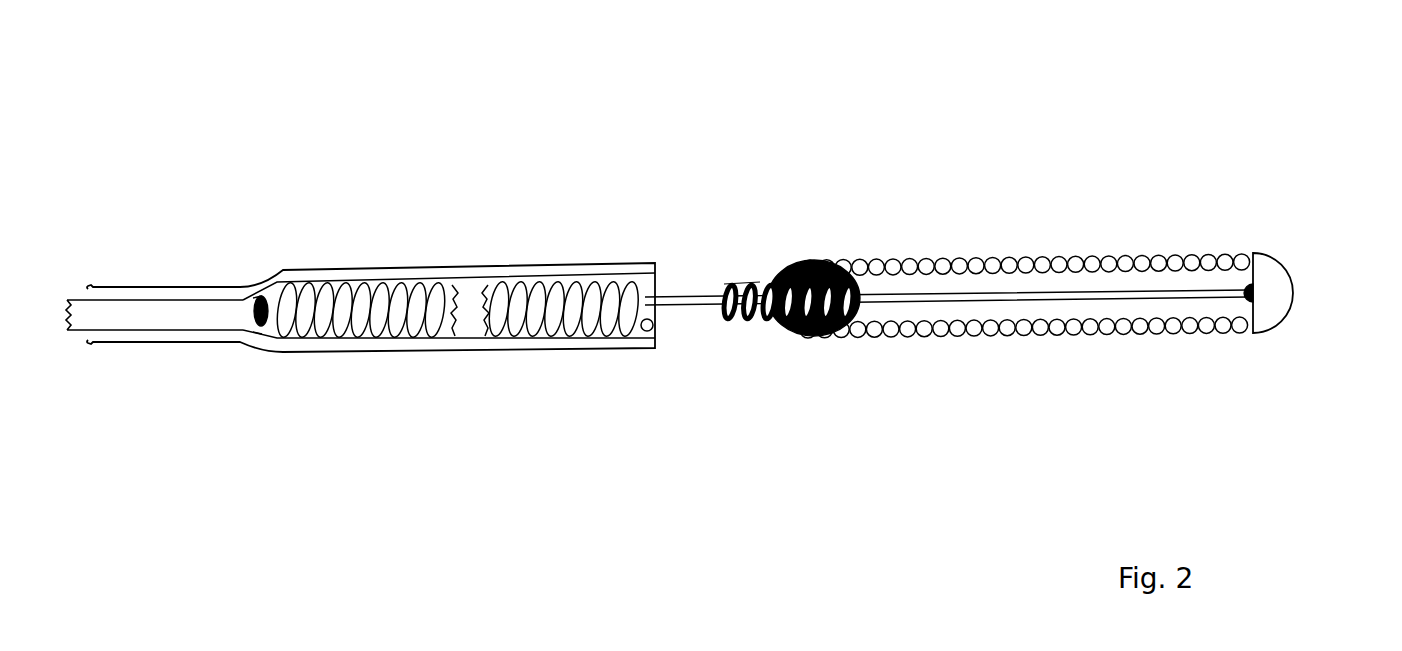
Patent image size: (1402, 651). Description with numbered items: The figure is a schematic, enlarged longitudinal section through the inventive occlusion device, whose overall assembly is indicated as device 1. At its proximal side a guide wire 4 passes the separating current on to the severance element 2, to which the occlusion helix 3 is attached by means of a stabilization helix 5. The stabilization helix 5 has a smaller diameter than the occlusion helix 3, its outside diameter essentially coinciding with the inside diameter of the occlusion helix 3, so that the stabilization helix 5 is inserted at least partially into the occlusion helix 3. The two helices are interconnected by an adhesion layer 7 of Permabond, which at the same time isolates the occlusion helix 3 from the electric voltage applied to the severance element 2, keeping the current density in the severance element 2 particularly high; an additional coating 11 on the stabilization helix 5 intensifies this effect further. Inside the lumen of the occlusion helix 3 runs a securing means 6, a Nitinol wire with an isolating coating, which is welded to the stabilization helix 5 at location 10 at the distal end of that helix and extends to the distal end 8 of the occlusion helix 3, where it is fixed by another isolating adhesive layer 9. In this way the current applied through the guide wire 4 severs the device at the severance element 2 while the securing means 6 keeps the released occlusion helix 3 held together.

The handle housing 1 is at (372, 273).
The severance element 2 is at (693, 303).
The occlusion helix 3 is at (913, 338).
The guide wire 4 is at (167, 317).
The stabilization helix 5 is at (750, 307).
The securing means 6 is at (970, 293).
The adhesion layer 7 is at (794, 262).
The distal end of occlusion helix 8 is at (1272, 300).
The isolating adhesive layer 9 is at (1253, 262).
The welding location 10 is at (868, 330).
The additional coating 11 is at (770, 283).